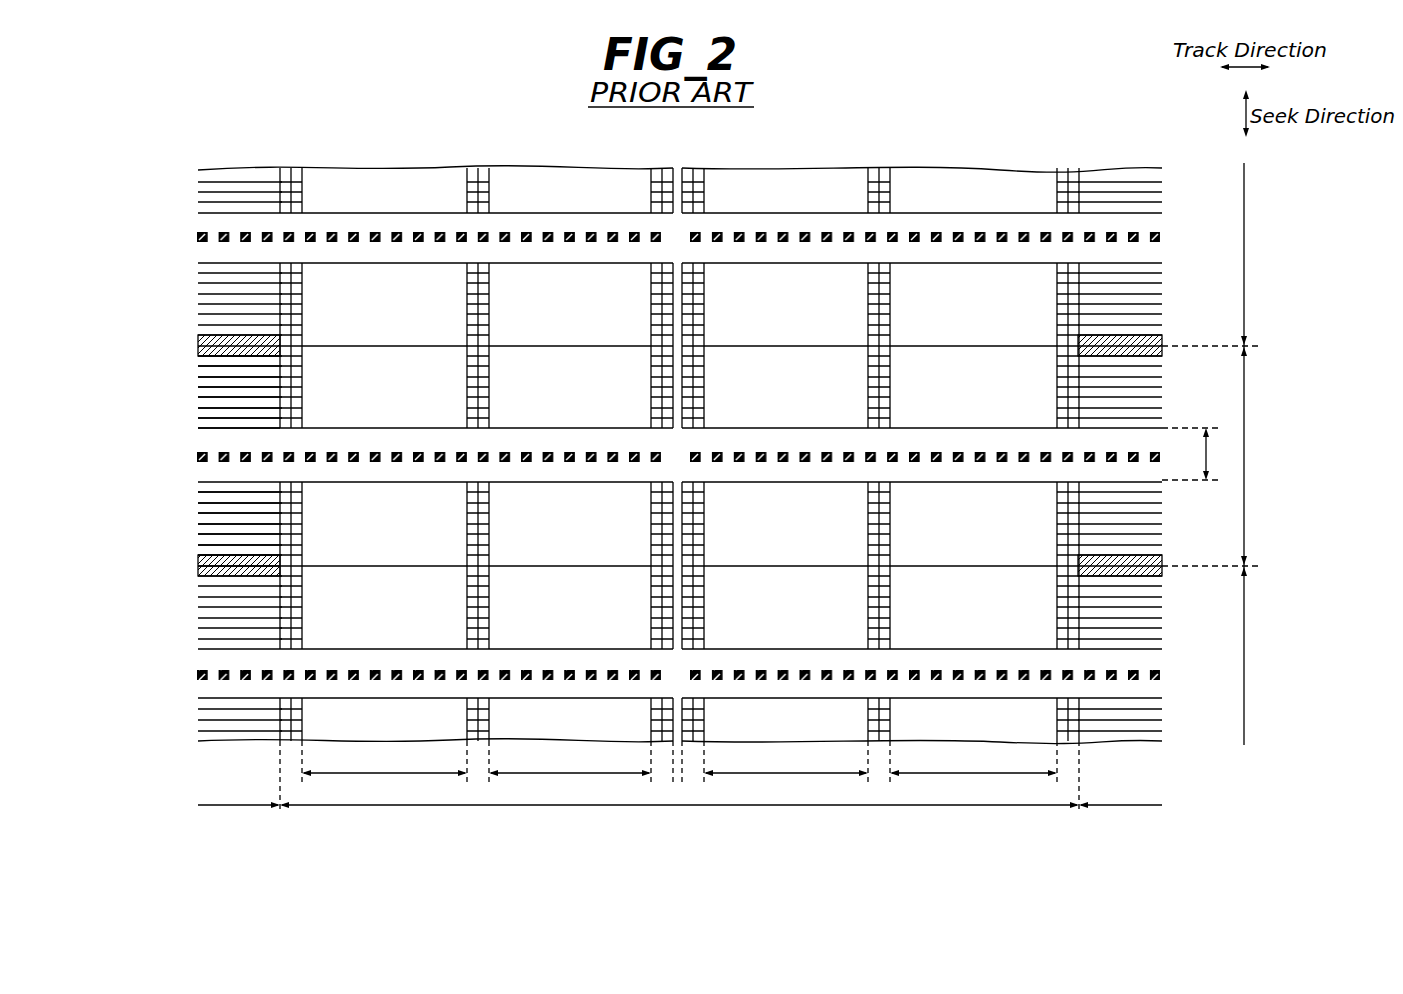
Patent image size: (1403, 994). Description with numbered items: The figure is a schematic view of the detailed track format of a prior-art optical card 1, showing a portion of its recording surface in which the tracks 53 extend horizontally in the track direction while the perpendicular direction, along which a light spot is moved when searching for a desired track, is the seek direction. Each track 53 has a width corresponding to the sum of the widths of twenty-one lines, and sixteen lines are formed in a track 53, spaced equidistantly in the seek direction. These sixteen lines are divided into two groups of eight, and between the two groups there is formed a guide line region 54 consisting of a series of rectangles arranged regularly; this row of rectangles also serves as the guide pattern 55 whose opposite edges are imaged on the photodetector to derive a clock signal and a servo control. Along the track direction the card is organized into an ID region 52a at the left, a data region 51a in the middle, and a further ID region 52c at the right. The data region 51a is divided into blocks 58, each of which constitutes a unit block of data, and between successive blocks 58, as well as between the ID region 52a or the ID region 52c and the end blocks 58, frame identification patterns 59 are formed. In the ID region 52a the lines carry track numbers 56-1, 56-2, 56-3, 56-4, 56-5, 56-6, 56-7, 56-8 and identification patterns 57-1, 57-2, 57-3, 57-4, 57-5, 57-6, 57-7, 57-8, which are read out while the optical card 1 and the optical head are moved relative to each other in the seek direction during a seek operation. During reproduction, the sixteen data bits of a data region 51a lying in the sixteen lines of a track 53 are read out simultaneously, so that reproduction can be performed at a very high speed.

The optical card 1 is at (963, 170).
The data region 51a is at (679, 819).
The ID region 52a is at (226, 509).
The ID area 52c is at (1120, 509).
The track 53 is at (1251, 454).
The guide line region 54 is at (1199, 454).
The guide pattern 55 is at (198, 457).
The track number 56-1 is at (198, 372).
The track number 56-2 is at (198, 380).
The track number 56-3 is at (198, 397).
The track number 56-4 is at (198, 407).
The track number 56-5 is at (198, 500).
The track number 56-6 is at (198, 510).
The track number 56-7 is at (198, 527).
The track number 56-8 is at (198, 537).
The identification pattern 57-1 is at (198, 353).
The identification pattern 57-2 is at (198, 363).
The identification pattern 57-3 is at (198, 388).
The identification pattern 57-4 is at (198, 422).
The identification pattern 57-5 is at (198, 490).
The identification pattern 57-6 is at (198, 518).
The identification pattern 57-7 is at (198, 547).
The identification pattern 57-8 is at (198, 555).
The block 58 is at (679, 762).
The frame identification pattern 59 is at (278, 773).